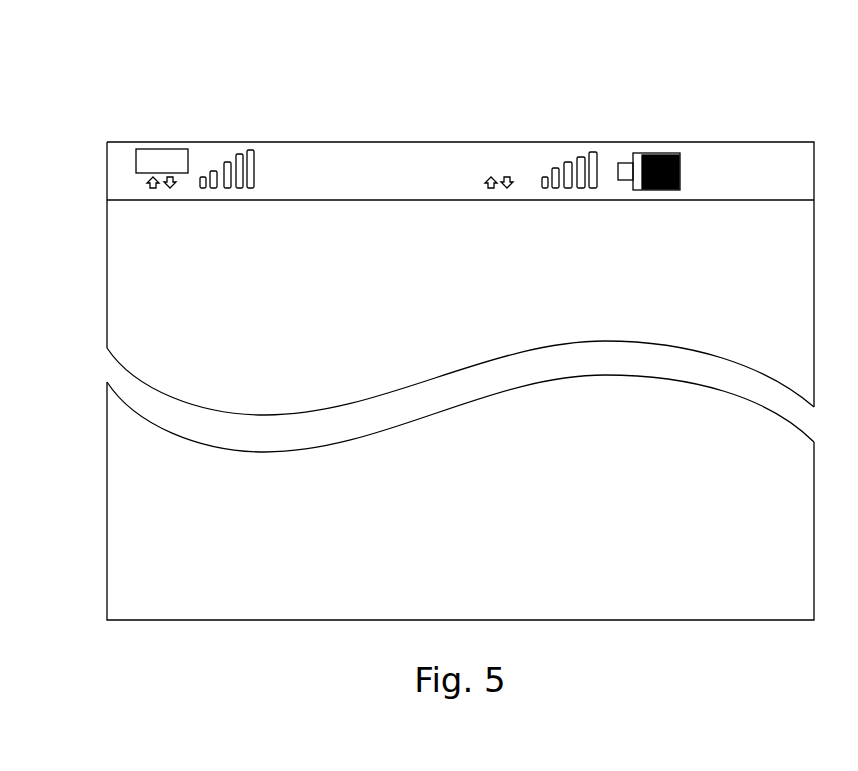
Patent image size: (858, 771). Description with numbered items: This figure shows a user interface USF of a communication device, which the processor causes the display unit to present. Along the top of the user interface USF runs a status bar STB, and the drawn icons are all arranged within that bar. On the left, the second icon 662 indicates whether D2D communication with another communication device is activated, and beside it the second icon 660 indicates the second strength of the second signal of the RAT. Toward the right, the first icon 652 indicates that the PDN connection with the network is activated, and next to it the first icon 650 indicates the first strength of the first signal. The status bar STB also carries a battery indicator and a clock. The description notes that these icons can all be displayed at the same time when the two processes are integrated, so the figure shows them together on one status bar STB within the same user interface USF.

The user interface USF is at (78, 101).
The status bar STB is at (372, 168).
The second icon 662 is at (162, 148).
The second icon 660 is at (235, 148).
The first icon 652 is at (502, 148).
The first icon 650 is at (575, 152).